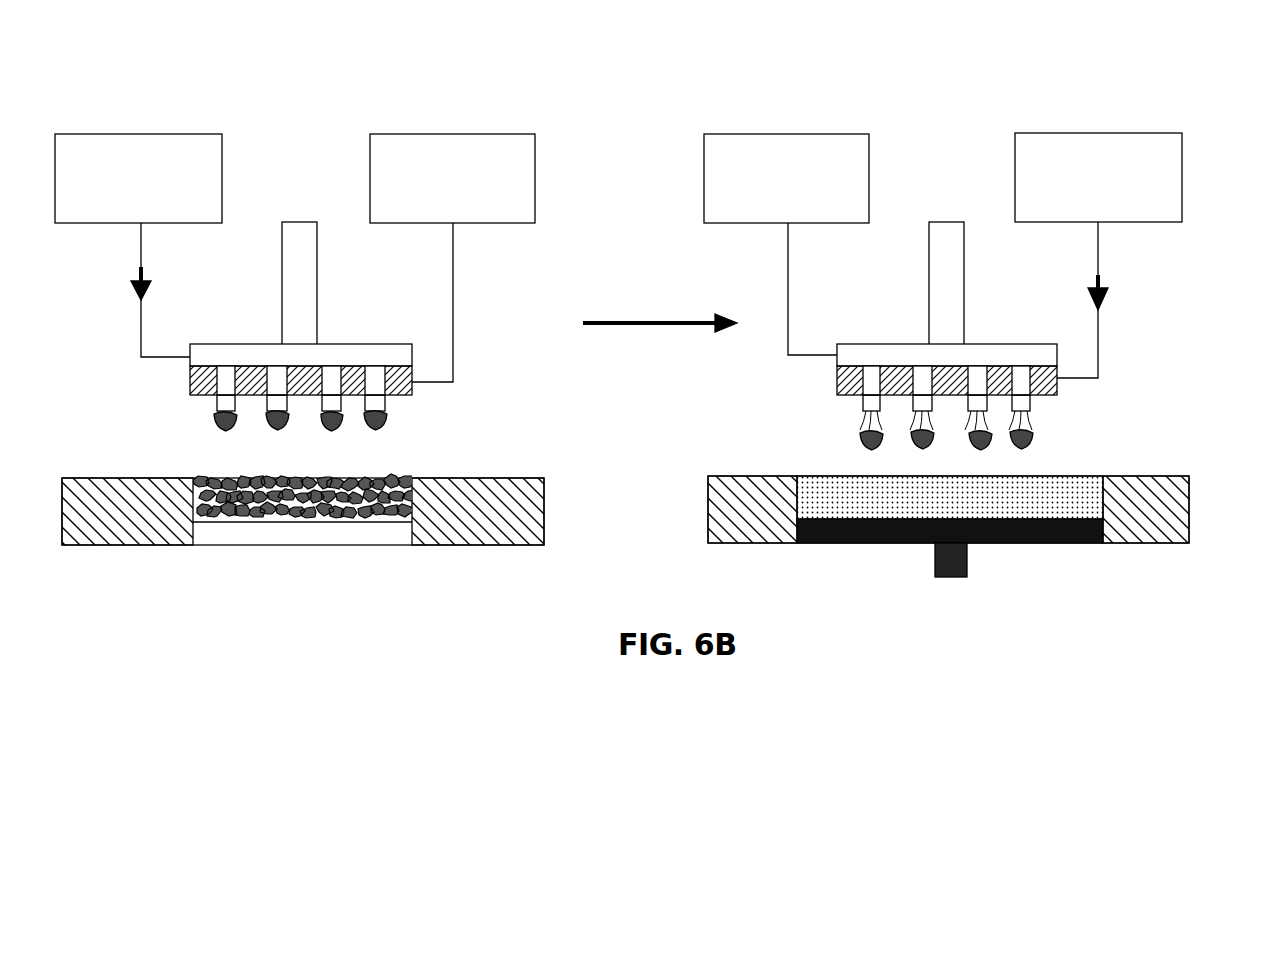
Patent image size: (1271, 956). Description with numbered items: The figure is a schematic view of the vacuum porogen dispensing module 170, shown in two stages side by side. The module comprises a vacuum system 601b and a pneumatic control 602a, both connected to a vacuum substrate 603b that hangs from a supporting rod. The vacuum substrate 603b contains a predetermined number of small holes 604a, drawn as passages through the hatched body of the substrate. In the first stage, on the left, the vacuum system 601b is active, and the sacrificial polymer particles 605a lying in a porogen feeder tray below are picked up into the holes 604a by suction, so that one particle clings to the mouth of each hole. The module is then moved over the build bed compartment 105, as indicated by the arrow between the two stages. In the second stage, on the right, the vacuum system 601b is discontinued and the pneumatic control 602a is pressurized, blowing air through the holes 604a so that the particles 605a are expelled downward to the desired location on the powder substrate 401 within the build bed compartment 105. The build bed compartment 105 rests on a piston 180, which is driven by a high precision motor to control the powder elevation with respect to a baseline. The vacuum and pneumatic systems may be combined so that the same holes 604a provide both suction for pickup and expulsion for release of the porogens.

The vacuum porogen dispensing module 170 is at (256, 72).
The vacuum system 601b is at (198, 157).
The pneumatic control 602a is at (517, 173).
The vacuum substrate 603b is at (400, 357).
The holes 604a is at (378, 404).
The sacrificial polymer particles 605a is at (398, 477).
The powder substrate 401 is at (1032, 505).
The build bed compartment 105 is at (1055, 540).
The piston 180 is at (985, 545).